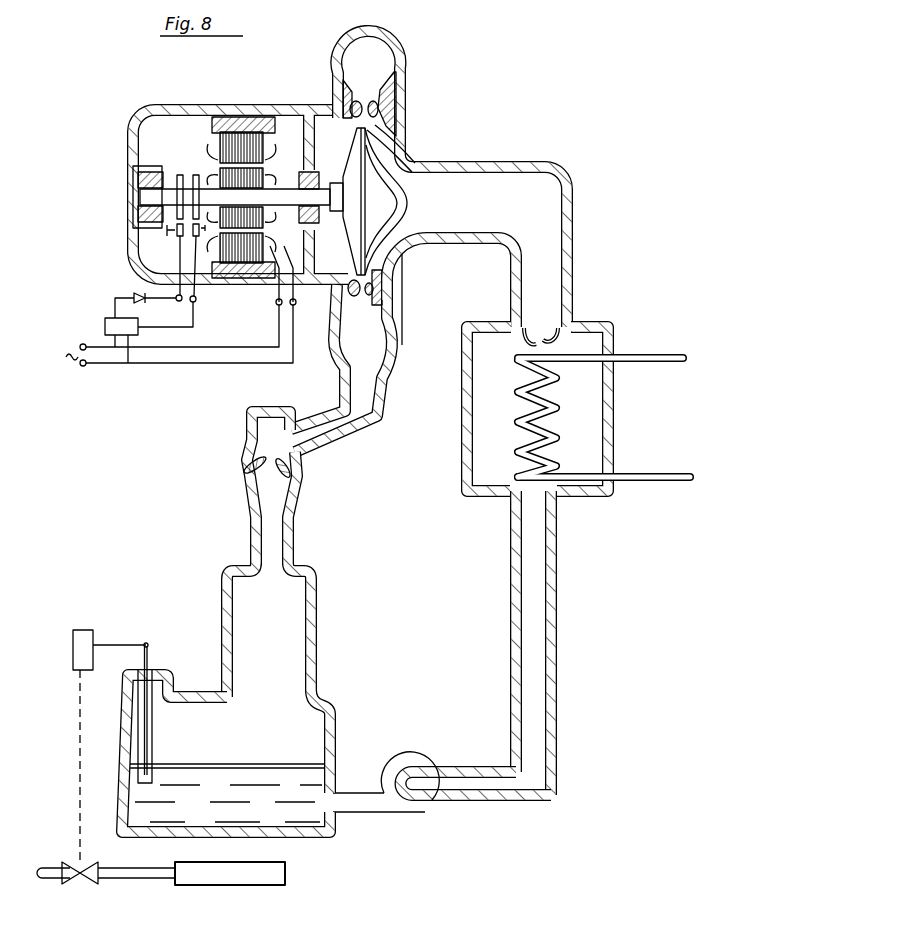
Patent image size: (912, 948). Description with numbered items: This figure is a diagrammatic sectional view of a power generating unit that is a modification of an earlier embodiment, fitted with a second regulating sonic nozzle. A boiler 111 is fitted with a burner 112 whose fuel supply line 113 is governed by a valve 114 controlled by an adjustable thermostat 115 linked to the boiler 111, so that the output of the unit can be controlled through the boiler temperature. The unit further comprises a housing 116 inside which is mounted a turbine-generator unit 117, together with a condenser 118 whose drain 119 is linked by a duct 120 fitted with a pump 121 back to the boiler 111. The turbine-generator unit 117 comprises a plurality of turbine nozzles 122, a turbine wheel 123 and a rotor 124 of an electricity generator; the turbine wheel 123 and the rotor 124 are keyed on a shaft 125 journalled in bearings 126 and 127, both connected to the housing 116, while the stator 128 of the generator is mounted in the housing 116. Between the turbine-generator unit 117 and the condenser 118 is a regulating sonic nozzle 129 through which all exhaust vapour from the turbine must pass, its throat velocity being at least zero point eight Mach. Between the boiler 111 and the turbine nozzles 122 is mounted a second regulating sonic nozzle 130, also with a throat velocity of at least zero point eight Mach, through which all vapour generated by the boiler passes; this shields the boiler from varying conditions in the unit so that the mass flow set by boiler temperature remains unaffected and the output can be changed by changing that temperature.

The boiler 111 is at (238, 608).
The burner 112 is at (253, 884).
The fuel supply line 113 is at (133, 874).
The valve 114 is at (80, 877).
The thermostat 115 is at (76, 649).
The housing 116 is at (483, 165).
The turbine-generator unit 117 is at (289, 124).
The condenser 118 is at (465, 407).
The drain 119 is at (553, 527).
The duct 120 is at (502, 799).
The pump 121 is at (416, 757).
The turbine nozzles 122 is at (373, 106).
The turbine wheel 123 is at (394, 167).
The rotor 124 is at (220, 173).
The shaft 125 is at (150, 195).
The bearing 126 is at (311, 182).
The bearing 127 is at (142, 181).
The stator 128 is at (237, 124).
The regulating sonic nozzle 129 is at (552, 323).
The second regulating sonic nozzle 130 is at (250, 461).